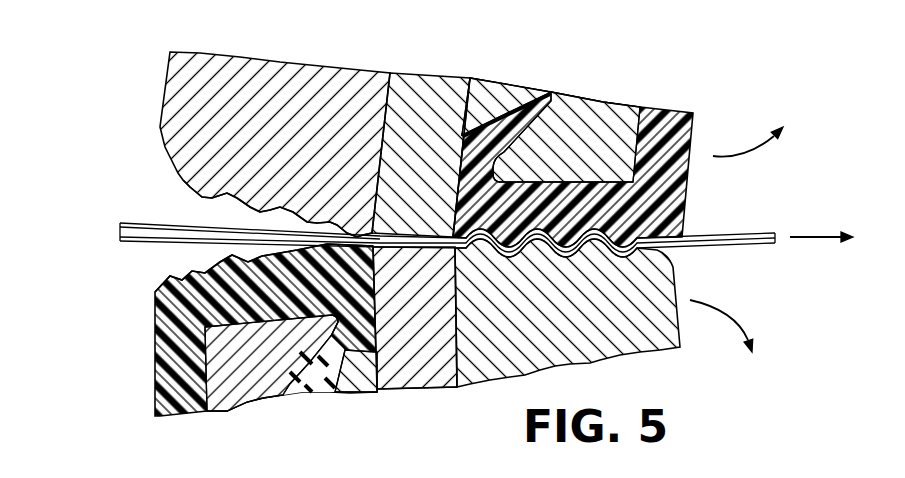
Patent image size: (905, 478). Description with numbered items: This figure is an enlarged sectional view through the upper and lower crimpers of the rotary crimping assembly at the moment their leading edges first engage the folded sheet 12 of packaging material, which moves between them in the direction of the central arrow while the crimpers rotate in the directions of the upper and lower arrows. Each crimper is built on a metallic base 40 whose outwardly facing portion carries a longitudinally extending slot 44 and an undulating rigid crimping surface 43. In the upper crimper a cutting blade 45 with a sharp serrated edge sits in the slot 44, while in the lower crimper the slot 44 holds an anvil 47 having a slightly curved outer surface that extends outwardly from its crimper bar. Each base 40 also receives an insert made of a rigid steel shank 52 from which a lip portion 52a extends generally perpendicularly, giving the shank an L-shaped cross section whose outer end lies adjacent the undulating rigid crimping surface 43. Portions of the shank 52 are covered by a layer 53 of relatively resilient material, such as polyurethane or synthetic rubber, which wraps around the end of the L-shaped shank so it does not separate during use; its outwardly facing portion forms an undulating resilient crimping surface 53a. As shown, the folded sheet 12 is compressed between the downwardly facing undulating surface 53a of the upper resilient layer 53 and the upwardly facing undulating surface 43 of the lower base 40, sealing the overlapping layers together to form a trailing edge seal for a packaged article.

The folded sheet of packaging material 12 is at (120, 237).
The metallic base 40 is at (233, 97).
The rigid crimping surface 43 is at (198, 203).
The slot 44 is at (390, 106).
The cutting blade 45 is at (428, 117).
The anvil 47 is at (396, 365).
The shank 52 is at (588, 137).
The lip portion 52a is at (500, 172).
The layer of resilient material 53 is at (663, 192).
The resilient crimping surface 53a is at (172, 274).